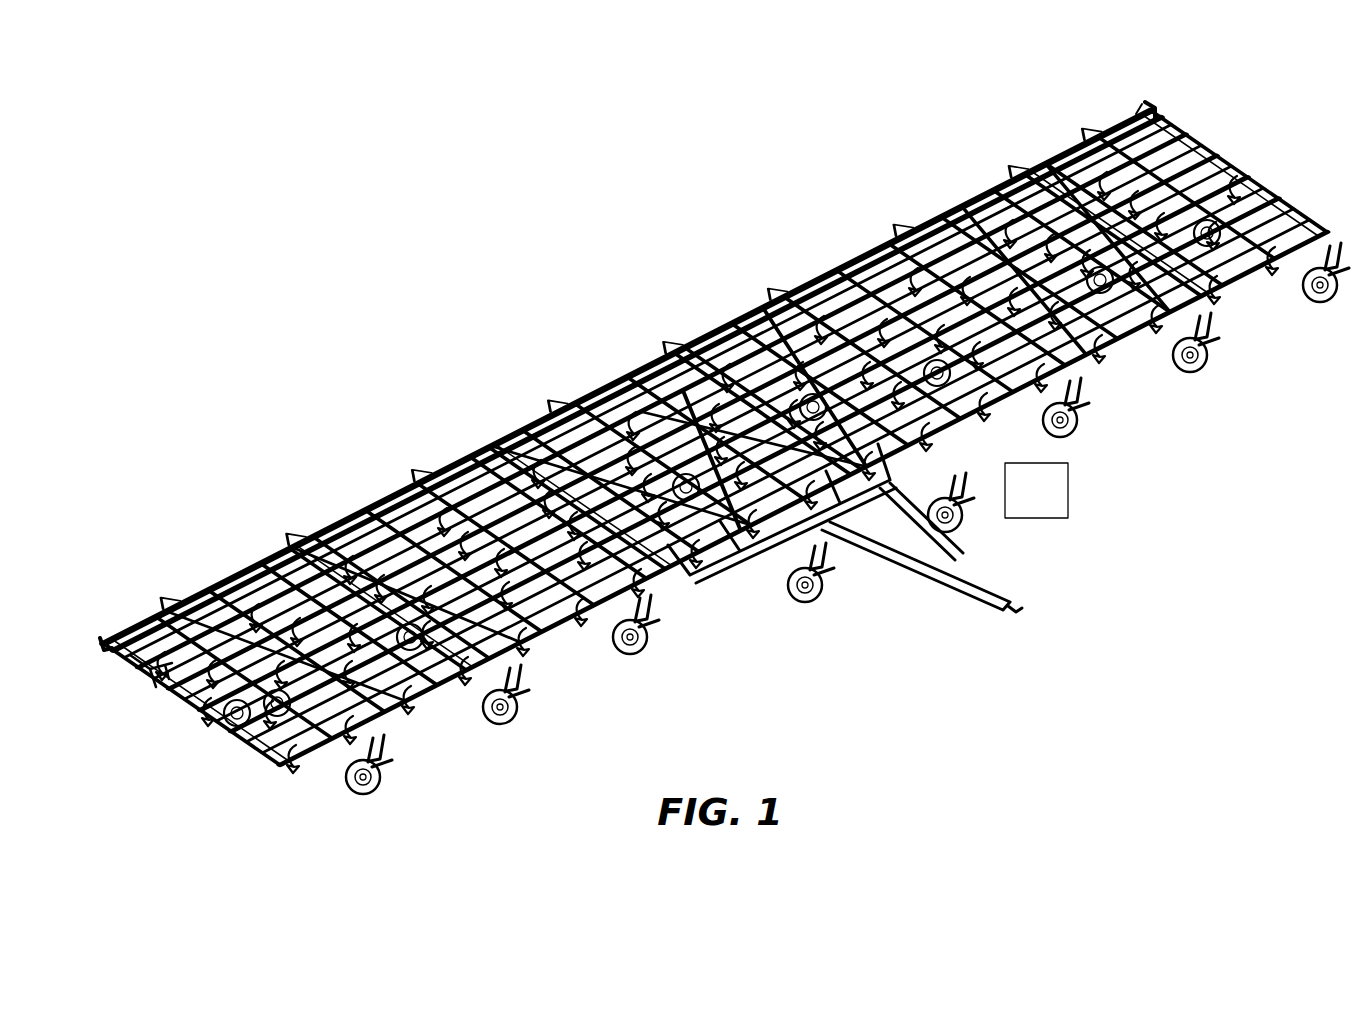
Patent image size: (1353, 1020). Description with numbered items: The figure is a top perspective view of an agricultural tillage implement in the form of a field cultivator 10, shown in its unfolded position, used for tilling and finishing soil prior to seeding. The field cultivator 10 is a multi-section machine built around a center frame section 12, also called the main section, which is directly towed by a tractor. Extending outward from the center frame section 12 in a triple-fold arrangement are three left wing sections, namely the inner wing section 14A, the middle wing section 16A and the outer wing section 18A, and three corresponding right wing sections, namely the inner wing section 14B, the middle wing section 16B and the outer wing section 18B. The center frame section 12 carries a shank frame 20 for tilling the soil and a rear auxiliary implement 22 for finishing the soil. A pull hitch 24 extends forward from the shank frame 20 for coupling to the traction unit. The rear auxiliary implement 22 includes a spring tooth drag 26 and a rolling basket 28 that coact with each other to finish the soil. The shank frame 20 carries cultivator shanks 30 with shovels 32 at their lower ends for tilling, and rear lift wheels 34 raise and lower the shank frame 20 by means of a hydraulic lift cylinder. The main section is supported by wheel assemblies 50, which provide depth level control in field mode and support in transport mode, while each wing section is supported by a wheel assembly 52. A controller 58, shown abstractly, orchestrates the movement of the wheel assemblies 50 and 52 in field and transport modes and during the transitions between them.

The field cultivator 10 is at (585, 205).
The center frame section 12 is at (700, 303).
The inner wing section 14A is at (812, 272).
The inner wing section 14B is at (530, 415).
The middle wing section 16A is at (955, 185).
The middle wing section 16B is at (337, 510).
The outer wing section 18A is at (1080, 125).
The outer wing section 18B is at (162, 600).
The shank frame 20 is at (1282, 208).
The rear auxiliary implement 22 is at (1042, 165).
The pull hitch 24 is at (990, 582).
The spring tooth drag 26 is at (172, 702).
The rolling basket 28 is at (1100, 130).
The cultivator shanks 30 is at (1248, 282).
The shovels 32 is at (1215, 315).
The rear lift wheels 34 is at (238, 740).
The wheel assemblies 50 is at (760, 290).
The wheel assembly 52 is at (420, 705).
The controller 58 is at (975, 548).